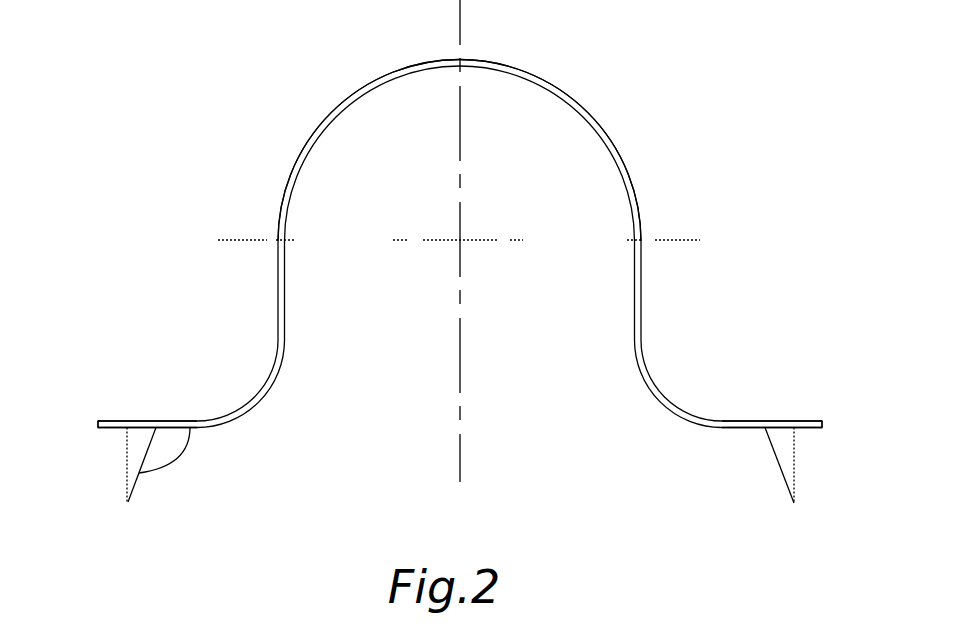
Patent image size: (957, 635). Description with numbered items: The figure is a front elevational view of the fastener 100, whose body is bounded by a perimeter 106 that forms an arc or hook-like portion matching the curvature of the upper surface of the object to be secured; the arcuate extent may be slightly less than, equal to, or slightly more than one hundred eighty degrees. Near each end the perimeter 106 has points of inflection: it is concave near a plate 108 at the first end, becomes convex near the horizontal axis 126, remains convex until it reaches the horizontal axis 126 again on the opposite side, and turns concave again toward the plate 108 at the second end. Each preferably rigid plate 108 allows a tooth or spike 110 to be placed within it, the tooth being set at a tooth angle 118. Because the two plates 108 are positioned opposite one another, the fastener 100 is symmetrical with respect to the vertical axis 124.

The fastener 100 is at (263, 103).
The perimeter 106 is at (496, 64).
The plate 108 is at (145, 420).
The tooth 110 is at (100, 453).
The tooth angle 118 is at (177, 460).
The vertical axis 124 is at (460, 25).
The horizontal axis 126 is at (237, 240).